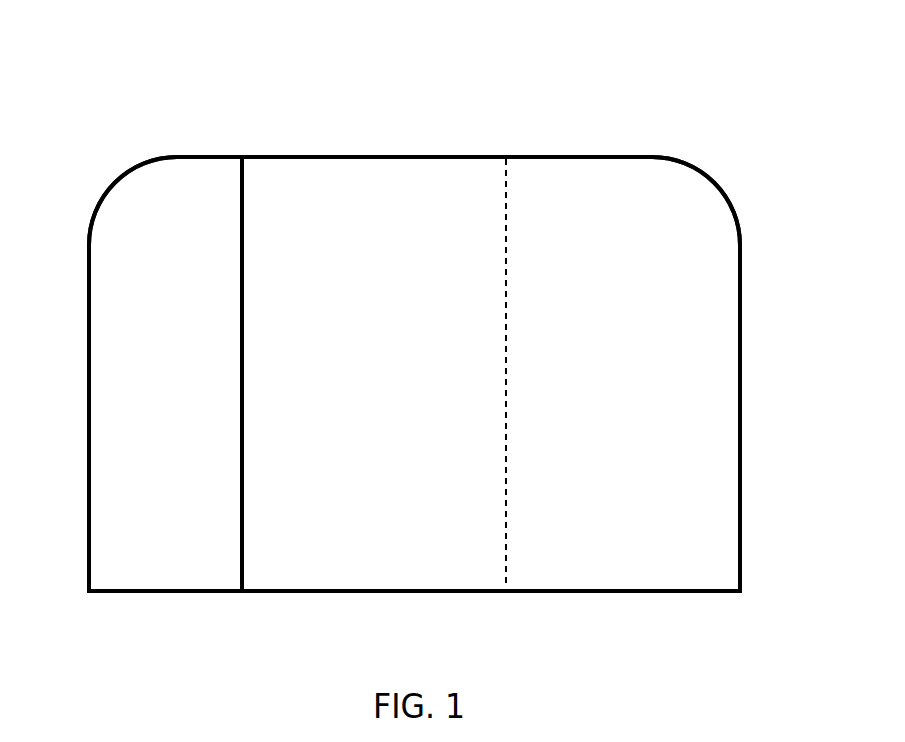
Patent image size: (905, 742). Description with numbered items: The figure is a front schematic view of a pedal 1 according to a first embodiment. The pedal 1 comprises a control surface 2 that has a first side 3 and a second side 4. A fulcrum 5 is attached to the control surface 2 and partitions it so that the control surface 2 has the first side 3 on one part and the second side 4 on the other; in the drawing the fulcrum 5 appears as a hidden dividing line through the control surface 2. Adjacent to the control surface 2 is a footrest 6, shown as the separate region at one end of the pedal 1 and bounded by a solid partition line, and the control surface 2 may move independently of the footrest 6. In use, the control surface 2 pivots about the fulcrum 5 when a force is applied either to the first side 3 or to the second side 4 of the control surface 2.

The pedal 1 is at (750, 96).
The control surface 2 is at (415, 157).
The first side 3 is at (647, 178).
The second side 4 is at (270, 182).
The fulcrum 5 is at (506, 562).
The footrest 6 is at (117, 308).